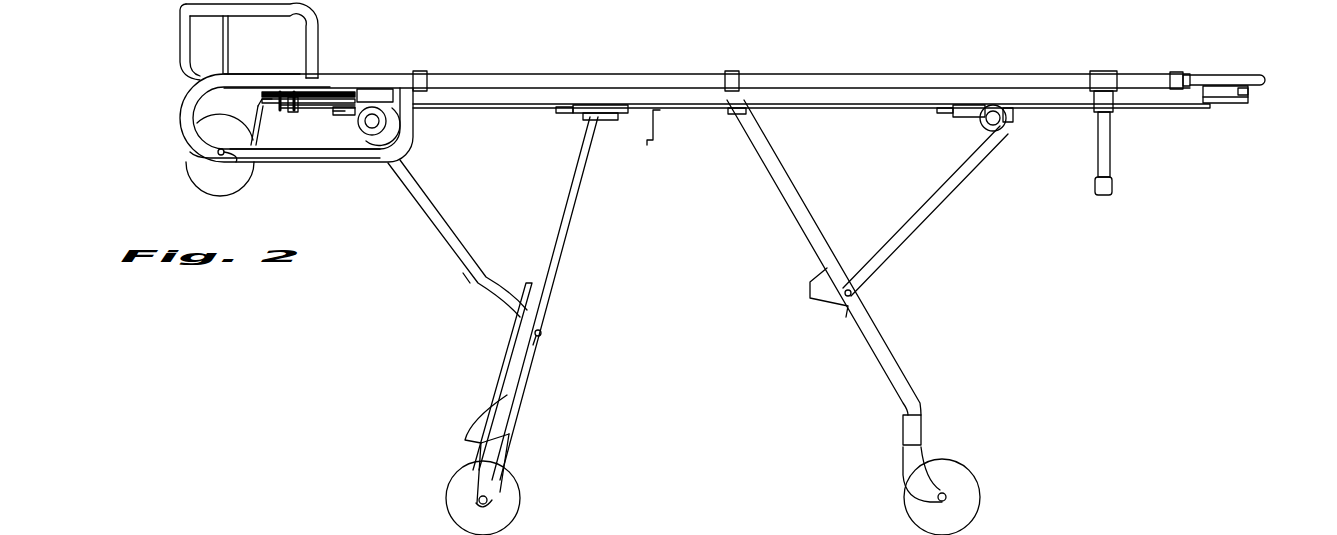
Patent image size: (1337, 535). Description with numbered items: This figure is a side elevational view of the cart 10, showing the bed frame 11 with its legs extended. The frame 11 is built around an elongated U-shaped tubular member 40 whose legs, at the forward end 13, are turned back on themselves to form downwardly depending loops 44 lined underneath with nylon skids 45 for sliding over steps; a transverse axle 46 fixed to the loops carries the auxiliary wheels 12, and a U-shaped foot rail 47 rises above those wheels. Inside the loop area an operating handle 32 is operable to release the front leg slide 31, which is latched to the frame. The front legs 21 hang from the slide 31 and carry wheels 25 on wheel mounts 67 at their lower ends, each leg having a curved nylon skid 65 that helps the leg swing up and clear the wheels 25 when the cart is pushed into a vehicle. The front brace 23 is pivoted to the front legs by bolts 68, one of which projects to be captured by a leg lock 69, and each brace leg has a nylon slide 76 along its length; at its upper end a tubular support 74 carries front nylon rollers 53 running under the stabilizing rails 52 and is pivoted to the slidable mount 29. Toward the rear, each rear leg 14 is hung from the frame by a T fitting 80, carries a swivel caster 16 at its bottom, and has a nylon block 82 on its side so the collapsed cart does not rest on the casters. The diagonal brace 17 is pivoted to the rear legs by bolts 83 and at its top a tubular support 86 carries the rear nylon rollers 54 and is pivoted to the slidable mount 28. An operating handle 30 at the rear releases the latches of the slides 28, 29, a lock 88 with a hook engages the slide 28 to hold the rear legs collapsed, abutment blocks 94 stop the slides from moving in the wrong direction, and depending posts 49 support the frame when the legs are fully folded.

The cart 10 is at (824, 31).
The bed frame 11 is at (744, 70).
The auxiliary wheels 12 is at (200, 170).
The forward end 13 is at (172, 80).
The rear legs 14 is at (882, 346).
The casters 16 is at (972, 494).
The diagonal brace 17 is at (915, 222).
The front legs 21 is at (556, 270).
The front brace 23 is at (460, 251).
The wheels 25 is at (518, 503).
The slidable mount 28 is at (956, 120).
The slidable mount 29 is at (350, 118).
The operating handle 30 is at (1246, 89).
The slide 31 is at (615, 131).
The operating handle 32 is at (248, 112).
The U-shaped tubular member 40 is at (744, 73).
The loops 44 is at (300, 154).
The nylon skids 45 is at (272, 168).
The transverse axle 46 is at (236, 160).
The foot rail 47 is at (182, 10).
The depending posts 49 is at (1111, 168).
The stabilizing rails 52 is at (699, 94).
The front nylon rollers 53 is at (384, 127).
The rear nylon rollers 54 is at (1006, 128).
The nylon skid 65 is at (512, 366).
The wheel mounts 67 is at (497, 479).
The bolts 68 is at (541, 344).
The leg lock 69 is at (660, 130).
The tubular support 74 is at (375, 118).
The nylon slide 76 is at (463, 275).
The T fitting 80 is at (735, 108).
The nylon block 82 is at (812, 308).
The bolts 83 is at (852, 293).
The tubular support 86 is at (994, 117).
The lock 88 is at (1249, 121).
The abutment block 94 is at (346, 118).